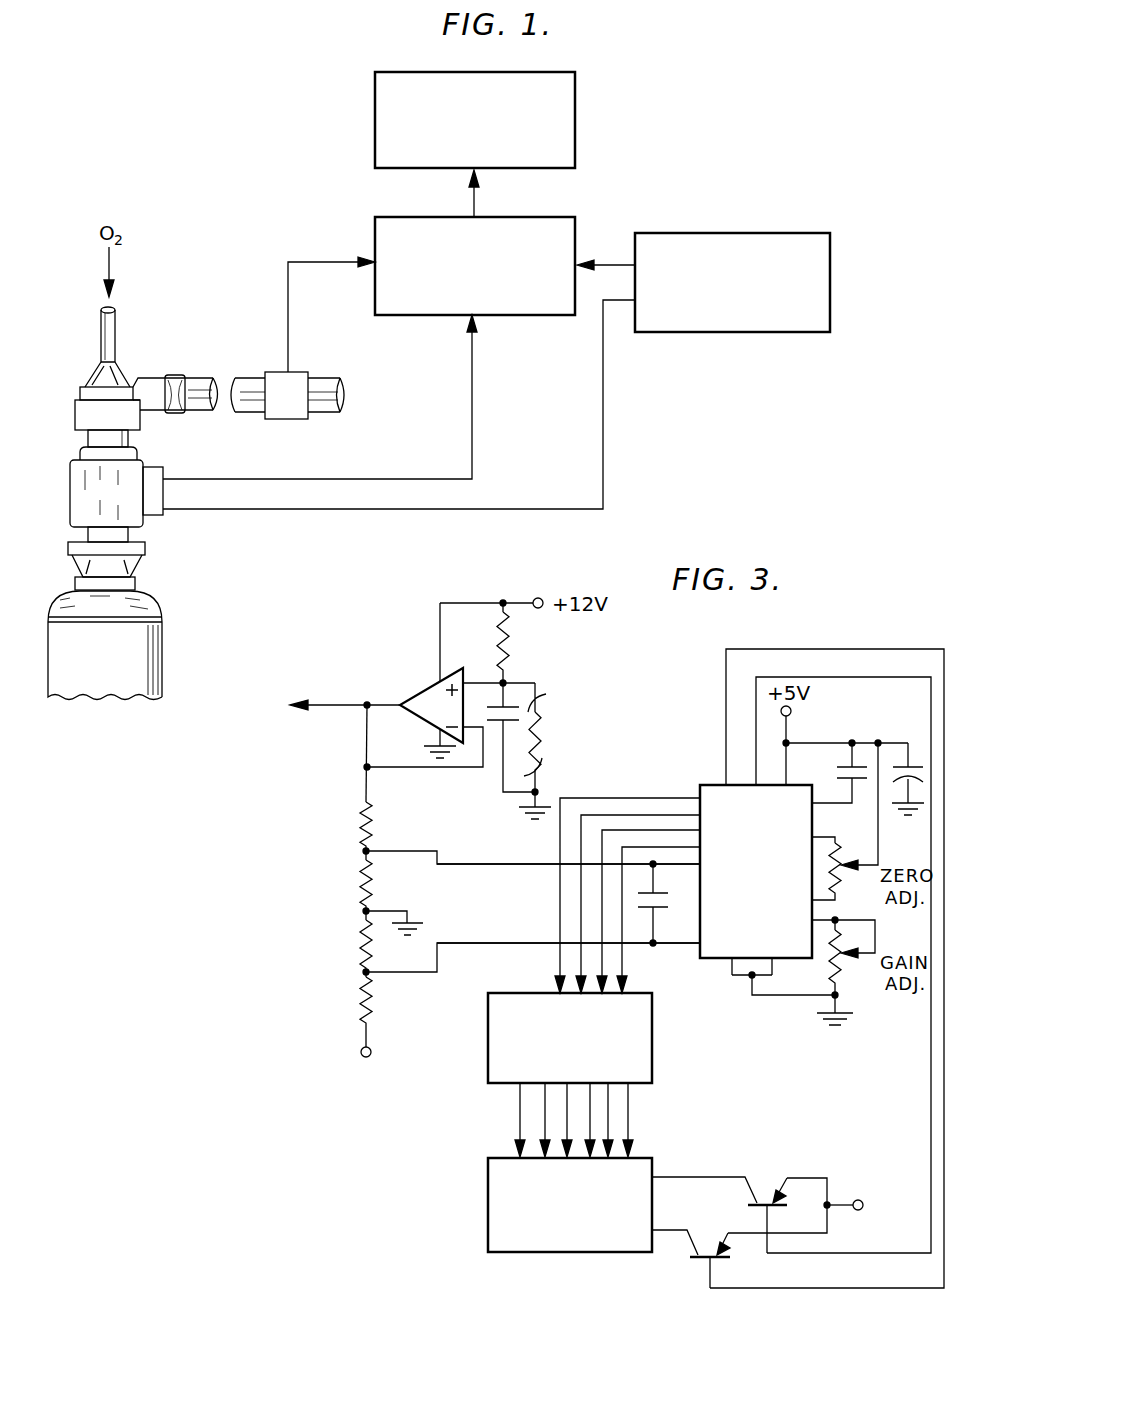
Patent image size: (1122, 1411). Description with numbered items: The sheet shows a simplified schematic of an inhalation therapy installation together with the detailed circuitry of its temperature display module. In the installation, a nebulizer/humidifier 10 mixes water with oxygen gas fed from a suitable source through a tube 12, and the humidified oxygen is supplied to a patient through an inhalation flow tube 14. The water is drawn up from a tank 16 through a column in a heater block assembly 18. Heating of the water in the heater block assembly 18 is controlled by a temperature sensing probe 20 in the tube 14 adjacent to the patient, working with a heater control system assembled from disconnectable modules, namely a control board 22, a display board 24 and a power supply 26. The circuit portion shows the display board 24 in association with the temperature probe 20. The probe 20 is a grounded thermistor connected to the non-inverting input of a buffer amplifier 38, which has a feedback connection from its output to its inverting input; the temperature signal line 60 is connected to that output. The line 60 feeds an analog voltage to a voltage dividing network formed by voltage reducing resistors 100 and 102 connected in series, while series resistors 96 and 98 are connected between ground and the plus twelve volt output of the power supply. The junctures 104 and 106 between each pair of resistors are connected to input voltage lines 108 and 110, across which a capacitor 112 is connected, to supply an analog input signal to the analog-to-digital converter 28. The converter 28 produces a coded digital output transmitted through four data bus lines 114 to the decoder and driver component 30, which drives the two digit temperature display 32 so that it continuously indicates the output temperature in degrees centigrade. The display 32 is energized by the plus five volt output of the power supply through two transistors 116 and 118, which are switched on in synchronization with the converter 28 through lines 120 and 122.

In FIG. 1, the nebulizer/humidifier 10 is at (77, 410).
In FIG. 1, the tube 12 is at (110, 338).
In FIG. 1, the inhalation flow tube 14 is at (259, 380).
In FIG. 1, the tank 16 is at (158, 660).
In FIG. 1, the heater block assembly 18 is at (77, 492).
In FIG. 1, the temperature sensing probe 20 is at (287, 408).
In FIG. 3, the temperature sensing probe 20 is at (547, 734).
In FIG. 1, the control board 22 is at (548, 306).
In FIG. 1, the display board 24 is at (577, 145).
In FIG. 1, the power supply 26 is at (812, 243).
In FIG. 3, the analog-to-digital converter 28 is at (745, 895).
In FIG. 3, the decoder and driver component 30 is at (653, 1063).
In FIG. 3, the two digit temperature display 32 is at (487, 1185).
In FIG. 3, the buffer amplifier 38 is at (427, 693).
In FIG. 3, the temperature signal line 60 is at (341, 701).
In FIG. 3, the resistor 96 is at (358, 990).
In FIG. 3, the resistor 98 is at (355, 938).
In FIG. 3, the voltage reducing resistor 100 is at (357, 818).
In FIG. 3, the voltage reducing resistor 102 is at (361, 873).
In FIG. 3, the juncture 104 is at (373, 848).
In FIG. 3, the juncture 106 is at (370, 974).
In FIG. 3, the input voltage line 108 is at (503, 941).
In FIG. 3, the input voltage line 110 is at (507, 862).
In FIG. 3, the capacitor 112 is at (658, 908).
In FIG. 3, the data bus lines 114 is at (553, 948).
In FIG. 3, the transistor 116 is at (770, 1183).
In FIG. 3, the transistor 118 is at (710, 1240).
In FIG. 3, the line 120 is at (927, 1070).
In FIG. 3, the line 122 is at (942, 1098).